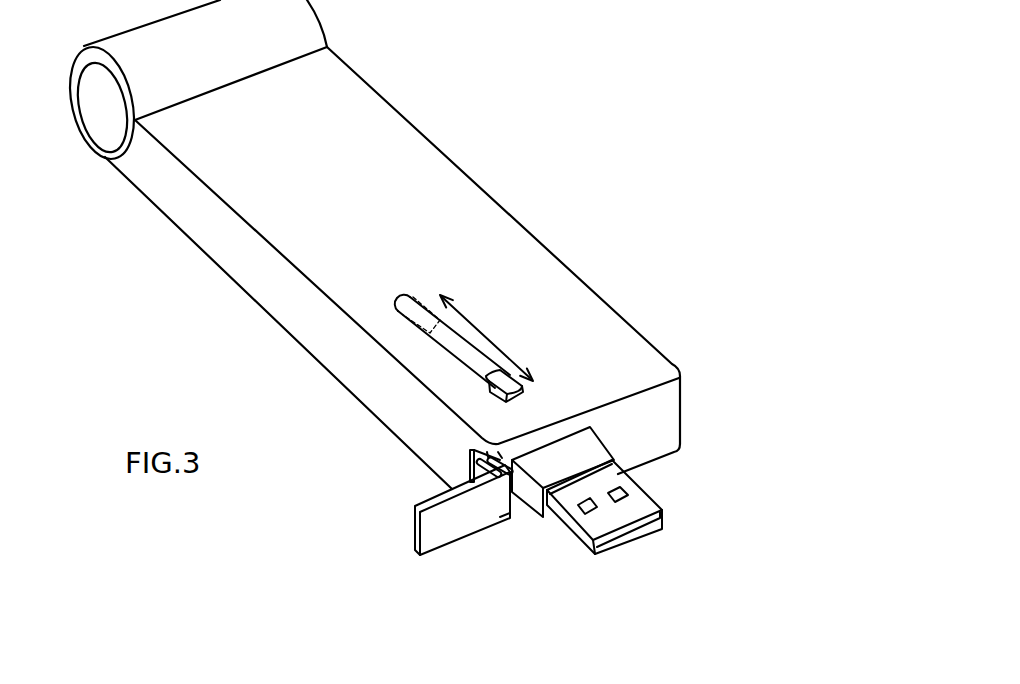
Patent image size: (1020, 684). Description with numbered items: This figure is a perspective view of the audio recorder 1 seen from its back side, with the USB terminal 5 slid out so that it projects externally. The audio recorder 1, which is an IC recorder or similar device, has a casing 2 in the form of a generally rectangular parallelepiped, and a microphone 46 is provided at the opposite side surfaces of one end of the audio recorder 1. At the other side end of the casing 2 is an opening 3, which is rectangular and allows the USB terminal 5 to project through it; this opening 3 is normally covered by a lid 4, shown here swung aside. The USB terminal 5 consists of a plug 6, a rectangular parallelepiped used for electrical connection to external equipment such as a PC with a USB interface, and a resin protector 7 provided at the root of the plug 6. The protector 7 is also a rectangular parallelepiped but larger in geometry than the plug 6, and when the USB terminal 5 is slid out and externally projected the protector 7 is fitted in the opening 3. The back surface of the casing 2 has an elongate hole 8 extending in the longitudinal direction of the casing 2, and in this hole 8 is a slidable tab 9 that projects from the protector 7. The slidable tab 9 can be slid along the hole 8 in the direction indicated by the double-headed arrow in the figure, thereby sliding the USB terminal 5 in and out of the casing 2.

The audio recorder 1 is at (389, 322).
The casing 2 is at (645, 337).
The opening 3 is at (603, 436).
The lid 4 is at (462, 538).
The USB terminal 5 is at (587, 536).
The plug 6 is at (618, 548).
The protector 7 is at (534, 517).
The elongate hole 8 is at (452, 358).
The slidable tab 9 is at (490, 388).
The microphone 46 is at (103, 132).